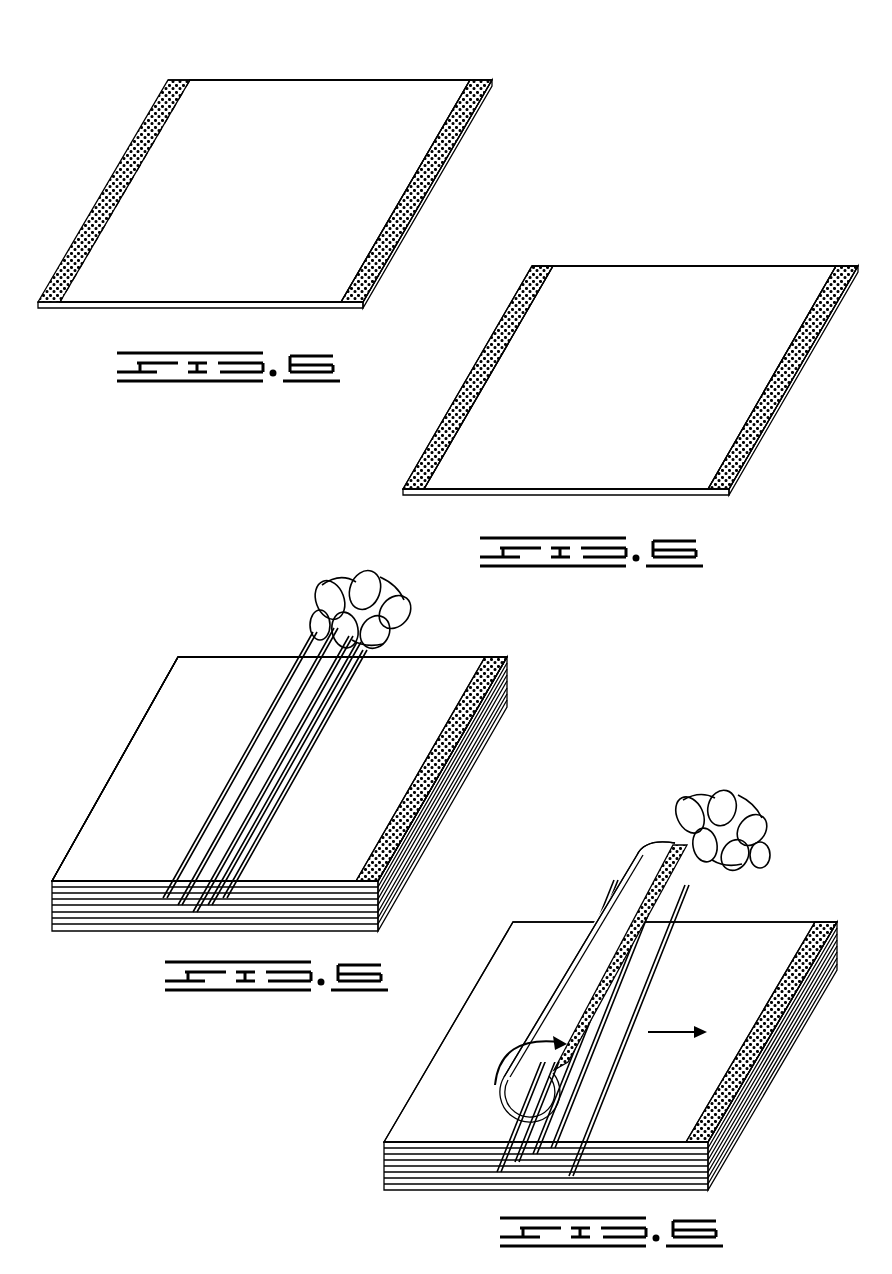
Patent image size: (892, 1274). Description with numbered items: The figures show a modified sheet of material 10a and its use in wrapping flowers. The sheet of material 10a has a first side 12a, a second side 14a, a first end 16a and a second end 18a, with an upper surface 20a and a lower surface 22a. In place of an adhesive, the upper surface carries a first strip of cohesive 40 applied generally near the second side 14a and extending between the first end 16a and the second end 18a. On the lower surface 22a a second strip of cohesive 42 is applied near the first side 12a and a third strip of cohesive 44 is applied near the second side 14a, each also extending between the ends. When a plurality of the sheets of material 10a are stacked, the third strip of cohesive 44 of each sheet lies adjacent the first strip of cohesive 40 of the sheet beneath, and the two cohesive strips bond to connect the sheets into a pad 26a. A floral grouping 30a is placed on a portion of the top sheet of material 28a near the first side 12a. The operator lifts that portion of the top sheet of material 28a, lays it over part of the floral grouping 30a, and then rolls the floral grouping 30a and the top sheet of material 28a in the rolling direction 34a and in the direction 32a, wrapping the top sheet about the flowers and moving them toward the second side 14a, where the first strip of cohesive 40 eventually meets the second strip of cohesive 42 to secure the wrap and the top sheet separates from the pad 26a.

In FIG. 6, the sheet of material 10a is at (462, 45).
In FIG. 7, the sheet of material 10a is at (745, 210).
In FIG. 8, the sheet of material 10a is at (208, 672).
In FIG. 9, the sheet of material 10a is at (750, 908).
In FIG. 6, the first side 12a is at (108, 180).
In FIG. 7, the first side 12a is at (795, 382).
In FIG. 8, the first side 12a is at (118, 765).
In FIG. 9, the first side 12a is at (437, 1050).
In FIG. 6, the second side 14a is at (440, 174).
In FIG. 7, the second side 14a is at (477, 358).
In FIG. 8, the second side 14a is at (490, 686).
In FIG. 9, the second side 14a is at (782, 1022).
In FIG. 6, the first end 16a is at (283, 78).
In FIG. 7, the first end 16a is at (645, 266).
In FIG. 8, the first end 16a is at (238, 657).
In FIG. 9, the first end 16a is at (651, 842).
In FIG. 6, the second end 18a is at (108, 308).
In FIG. 7, the second end 18a is at (475, 492).
In FIG. 8, the second end 18a is at (100, 886).
In FIG. 9, the second end 18a is at (500, 1133).
In FIG. 6, the upper surface 20a is at (352, 97).
In FIG. 7, the upper surface 20a is at (585, 495).
In FIG. 8, the upper surface 20a is at (185, 683).
In FIG. 9, the upper surface 20a is at (513, 1092).
In FIG. 6, the lower surface 22a is at (220, 308).
In FIG. 7, the lower surface 22a is at (718, 282).
In FIG. 9, the lower surface 22a is at (617, 902).
In FIG. 8, the pad 26a is at (442, 657).
In FIG. 9, the pad 26a is at (415, 1078).
In FIG. 8, the top sheet of material 28a is at (178, 727).
In FIG. 9, the top sheet of material 28a is at (785, 930).
In FIG. 8, the floral grouping 30a is at (315, 572).
In FIG. 9, the floral grouping 30a is at (752, 808).
In FIG. 9, the direction 32a is at (667, 1030).
In FIG. 9, the rolling direction 34a is at (502, 1062).
In FIG. 6, the first strip of cohesive 40 is at (455, 130).
In FIG. 8, the first strip of cohesive 40 is at (398, 818).
In FIG. 9, the first strip of cohesive 40 is at (782, 993).
In FIG. 7, the second strip of cohesive 42 is at (432, 448).
In FIG. 7, the third strip of cohesive 44 is at (757, 425).